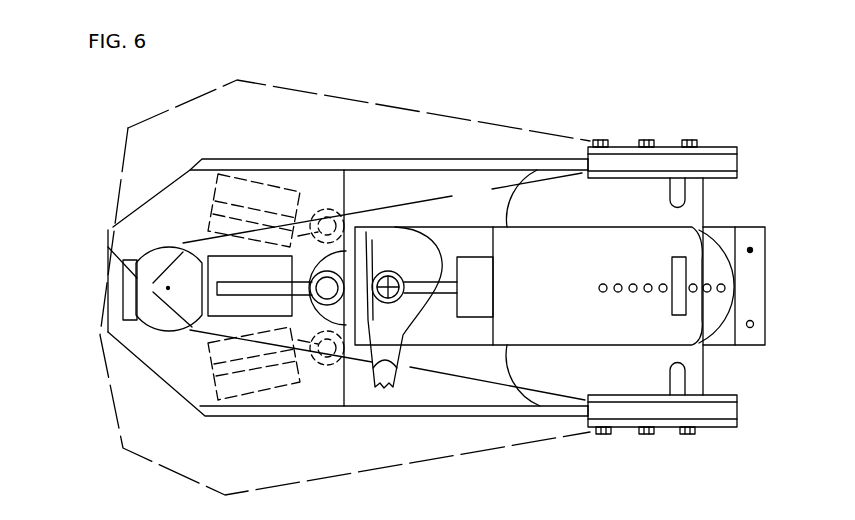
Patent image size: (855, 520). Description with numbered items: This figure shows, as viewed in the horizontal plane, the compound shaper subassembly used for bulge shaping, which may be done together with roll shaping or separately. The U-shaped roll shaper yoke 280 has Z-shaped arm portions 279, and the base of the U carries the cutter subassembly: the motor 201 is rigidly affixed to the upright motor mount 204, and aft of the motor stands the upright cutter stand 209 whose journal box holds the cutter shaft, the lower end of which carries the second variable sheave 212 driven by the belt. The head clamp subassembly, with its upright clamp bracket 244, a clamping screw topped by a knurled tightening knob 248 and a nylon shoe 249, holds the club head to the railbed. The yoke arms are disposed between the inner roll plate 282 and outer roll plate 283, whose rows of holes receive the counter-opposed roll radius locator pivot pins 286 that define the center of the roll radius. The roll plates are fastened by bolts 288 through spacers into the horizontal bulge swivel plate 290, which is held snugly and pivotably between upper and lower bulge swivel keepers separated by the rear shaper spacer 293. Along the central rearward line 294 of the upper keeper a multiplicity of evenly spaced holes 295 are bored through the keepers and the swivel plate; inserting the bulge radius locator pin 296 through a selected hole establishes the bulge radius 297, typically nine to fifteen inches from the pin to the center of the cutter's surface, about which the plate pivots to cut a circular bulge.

The motor 201 is at (158, 263).
The motor mount 204 is at (130, 287).
The cutter stand 209 is at (240, 287).
The second variable sheave 212 is at (327, 288).
The clamp bracket 244 is at (445, 287).
The tightening knob 248 is at (408, 340).
The shoe 249 is at (387, 287).
The arm portions 279 is at (553, 165).
The roll shaper yoke 280 is at (395, 408).
The inner roll plate 282 is at (718, 173).
The outer roll plate 283 is at (718, 152).
The roll radius locator pivot pins 286 is at (677, 142).
The bolts 288 is at (638, 142).
The bulge swivel plate 290 is at (532, 207).
The rear shaper spacer 293 is at (752, 328).
The rearward central longitudinal line 294 is at (595, 300).
The evenly spaced holes 295 is at (633, 287).
The bulge radius locator pin 296 is at (678, 300).
The bulge radius 297 is at (440, 198).